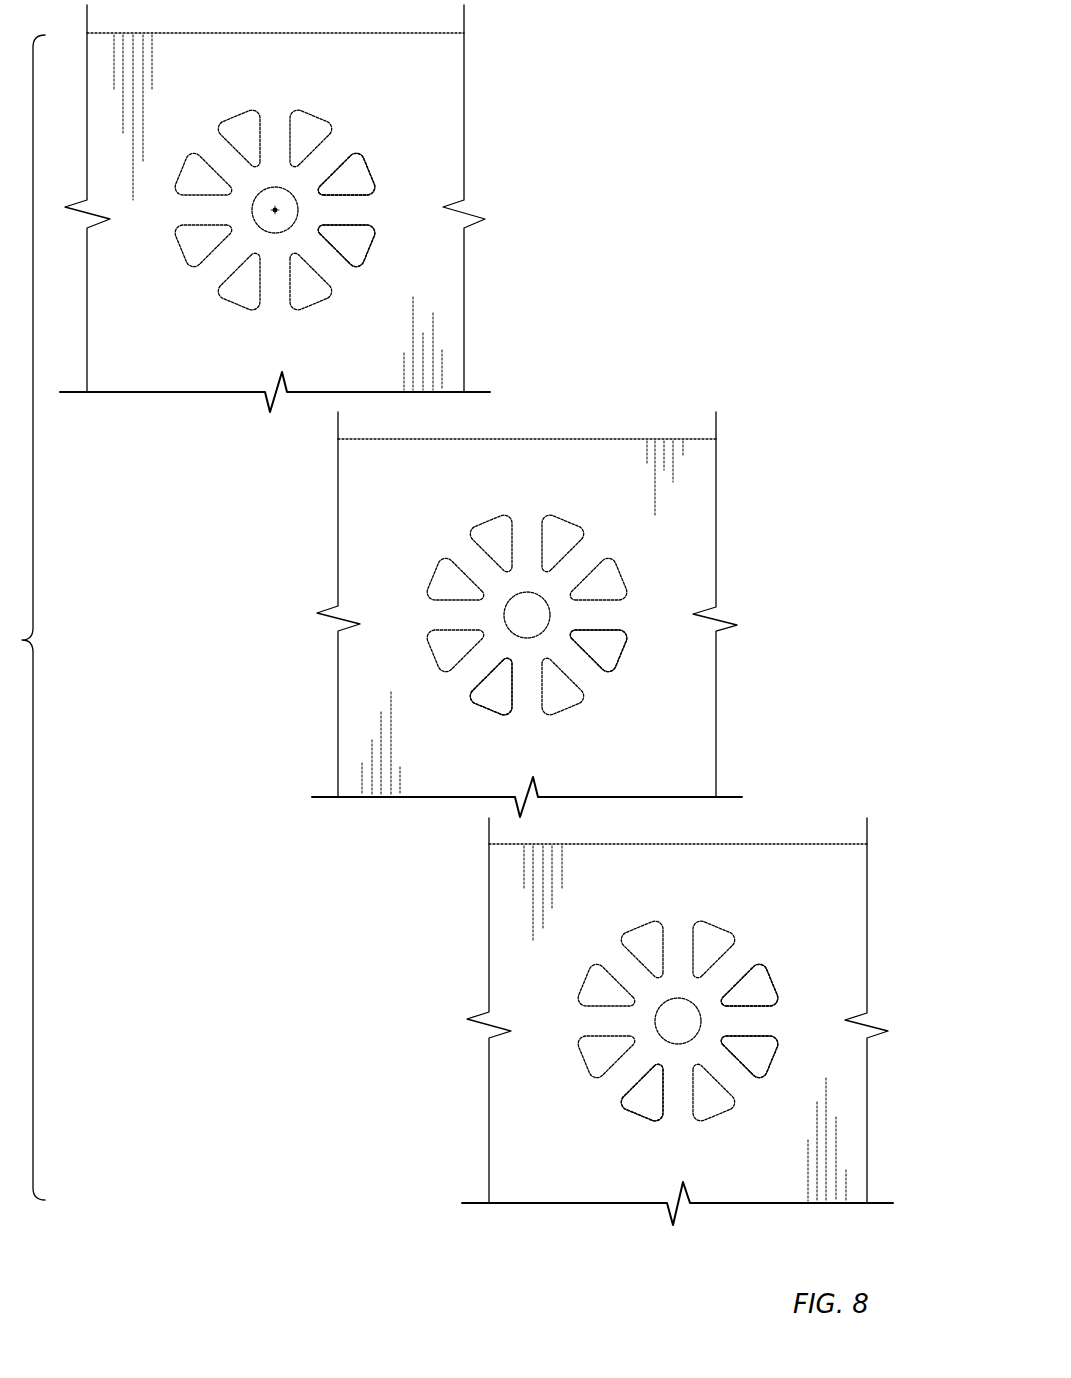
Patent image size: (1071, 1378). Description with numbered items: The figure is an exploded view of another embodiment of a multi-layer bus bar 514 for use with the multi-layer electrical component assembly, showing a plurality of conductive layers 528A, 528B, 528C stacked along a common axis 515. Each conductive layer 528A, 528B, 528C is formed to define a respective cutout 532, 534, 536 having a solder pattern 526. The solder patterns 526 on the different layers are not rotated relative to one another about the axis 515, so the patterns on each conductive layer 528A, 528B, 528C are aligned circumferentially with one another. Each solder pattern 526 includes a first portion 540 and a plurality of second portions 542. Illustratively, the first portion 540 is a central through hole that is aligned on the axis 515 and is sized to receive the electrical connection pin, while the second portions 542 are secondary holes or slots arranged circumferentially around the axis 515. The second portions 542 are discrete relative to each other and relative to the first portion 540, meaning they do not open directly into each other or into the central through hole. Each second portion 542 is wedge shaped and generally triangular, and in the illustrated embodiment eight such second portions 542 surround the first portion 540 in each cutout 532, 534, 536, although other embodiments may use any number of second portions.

The multi-layer bus bar 514 is at (776, 88).
The axis 515 is at (275, 206).
The solder pattern 526 is at (222, 316).
The conductive layer 528A is at (147, 358).
The conductive layer 528B is at (374, 510).
The conductive layer 528C is at (526, 917).
The cutout 532 is at (382, 253).
The cutout 534 is at (471, 709).
The cutout 536 is at (577, 1104).
The first portion 540 is at (284, 203).
The second portions 542 is at (382, 215).